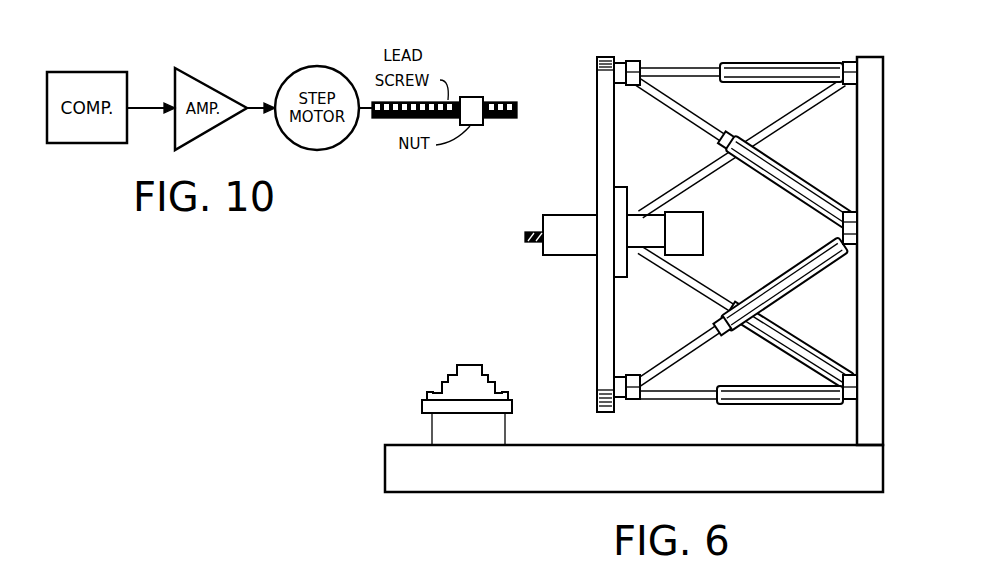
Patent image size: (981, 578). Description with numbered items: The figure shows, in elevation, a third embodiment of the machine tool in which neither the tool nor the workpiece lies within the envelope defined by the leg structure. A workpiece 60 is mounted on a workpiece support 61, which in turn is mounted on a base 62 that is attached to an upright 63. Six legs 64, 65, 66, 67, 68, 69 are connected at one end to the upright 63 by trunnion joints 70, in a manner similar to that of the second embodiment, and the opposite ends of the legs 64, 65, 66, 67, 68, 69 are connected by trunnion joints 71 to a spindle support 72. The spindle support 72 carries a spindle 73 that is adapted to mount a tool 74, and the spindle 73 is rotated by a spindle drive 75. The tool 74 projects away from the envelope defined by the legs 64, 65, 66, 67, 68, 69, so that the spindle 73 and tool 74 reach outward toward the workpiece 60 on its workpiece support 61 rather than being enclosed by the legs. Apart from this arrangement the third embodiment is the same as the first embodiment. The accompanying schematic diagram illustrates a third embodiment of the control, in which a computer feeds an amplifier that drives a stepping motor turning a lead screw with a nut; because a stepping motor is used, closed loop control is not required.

The workpiece 60 is at (470, 368).
The workpiece support 61 is at (440, 425).
The base 62 is at (572, 468).
The upright 63 is at (866, 325).
The leg 64 is at (754, 66).
The leg 65 is at (790, 117).
The leg 66 is at (750, 170).
The leg 67 is at (787, 272).
The leg 68 is at (792, 342).
The leg 69 is at (753, 388).
The trunnion joint 70 is at (850, 63).
The trunnion joint 71 is at (631, 70).
The spindle support 72 is at (600, 328).
The spindle 73 is at (587, 241).
The tool 74 is at (525, 245).
The spindle drive 75 is at (704, 232).